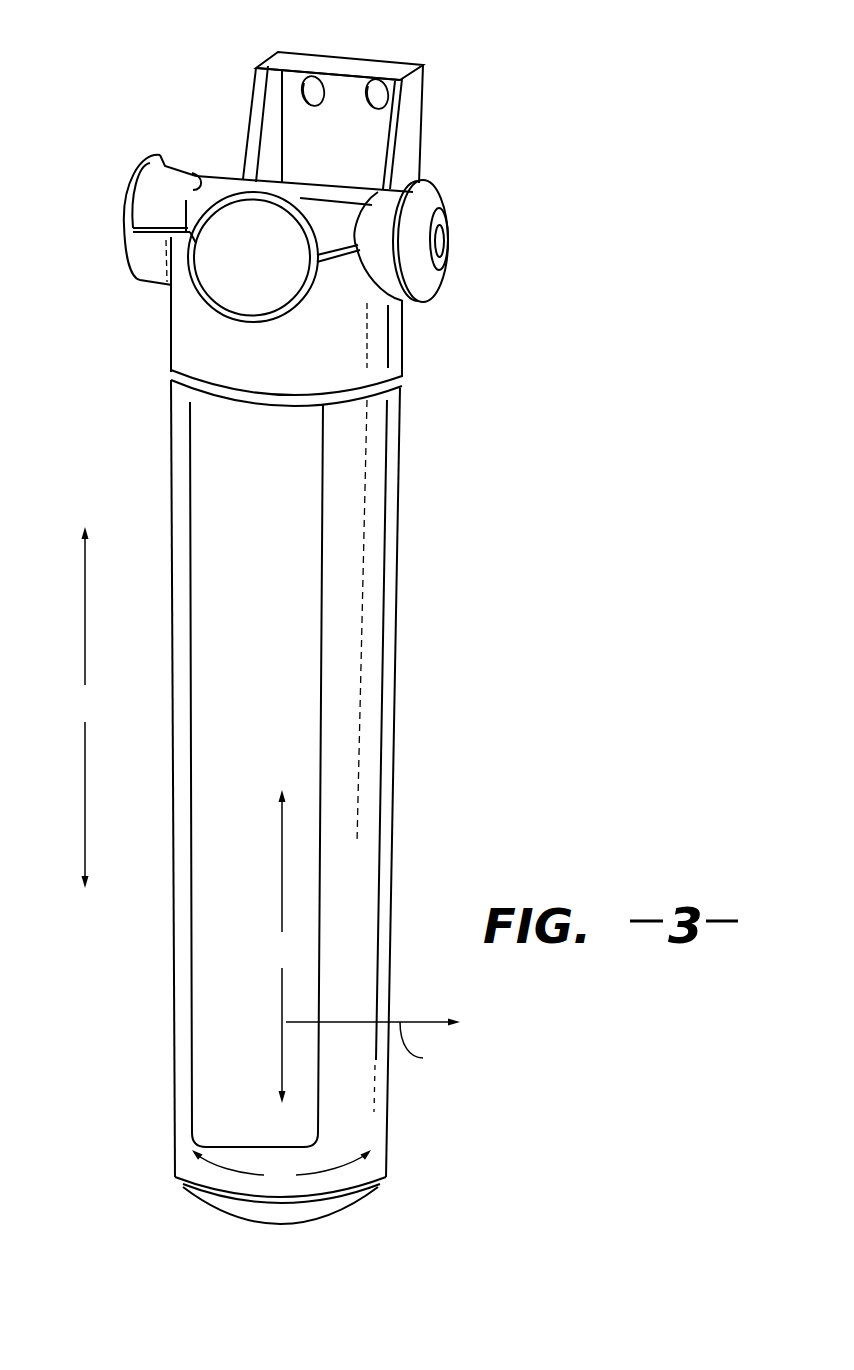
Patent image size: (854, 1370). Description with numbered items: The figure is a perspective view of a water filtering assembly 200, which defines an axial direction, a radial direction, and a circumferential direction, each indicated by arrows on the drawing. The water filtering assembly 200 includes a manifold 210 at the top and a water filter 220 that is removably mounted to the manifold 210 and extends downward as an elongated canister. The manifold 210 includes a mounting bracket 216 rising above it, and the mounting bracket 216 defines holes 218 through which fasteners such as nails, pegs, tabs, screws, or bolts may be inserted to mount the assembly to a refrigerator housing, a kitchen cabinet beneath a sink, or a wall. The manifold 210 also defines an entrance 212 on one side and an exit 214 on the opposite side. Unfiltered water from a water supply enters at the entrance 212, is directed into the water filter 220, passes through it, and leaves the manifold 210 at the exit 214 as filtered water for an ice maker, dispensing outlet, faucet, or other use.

The water filtering assembly 200 is at (596, 156).
The manifold 210 is at (380, 348).
The entrance 212 is at (120, 201).
The exit 214 is at (450, 237).
The mounting bracket 216 is at (412, 138).
The holes 218 is at (316, 76).
The water filter 220 is at (377, 518).